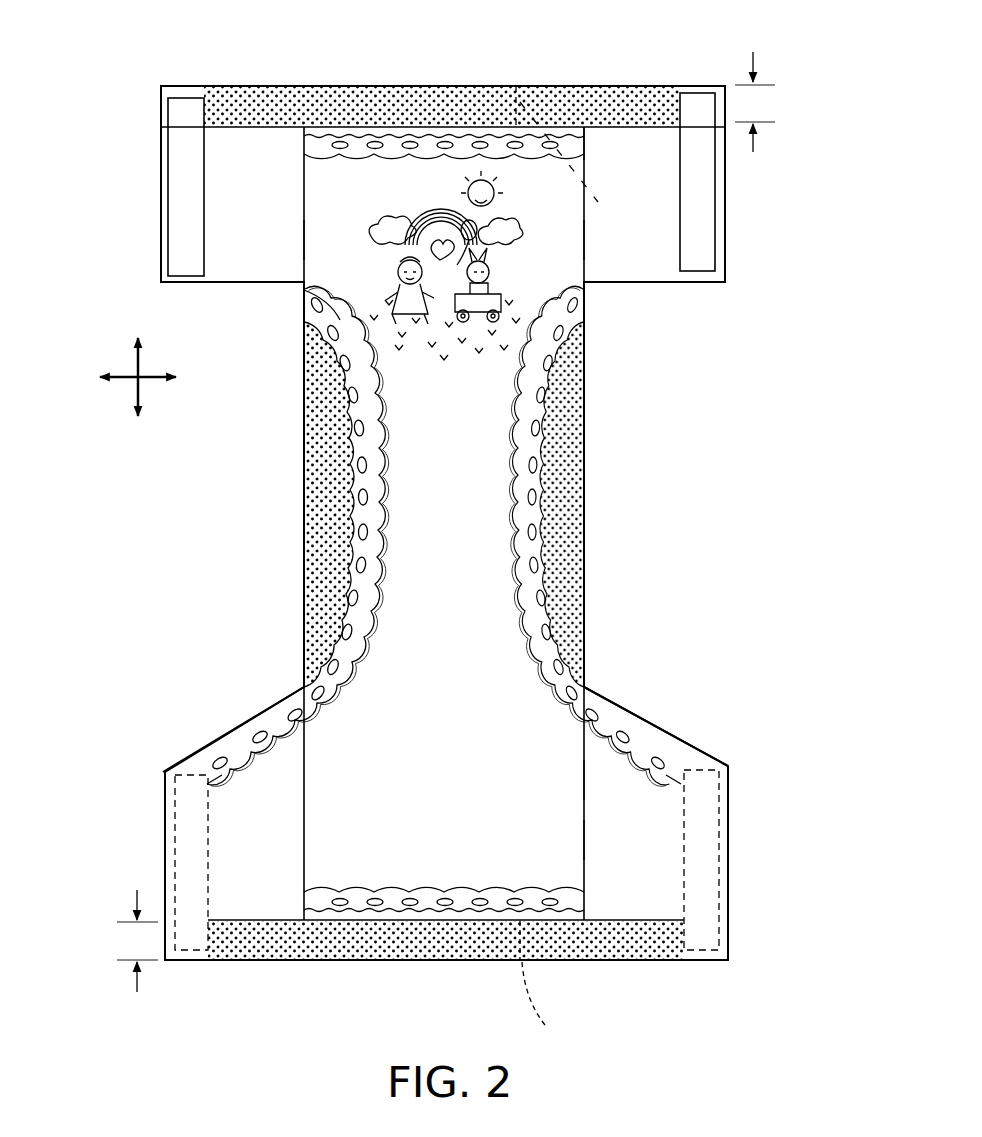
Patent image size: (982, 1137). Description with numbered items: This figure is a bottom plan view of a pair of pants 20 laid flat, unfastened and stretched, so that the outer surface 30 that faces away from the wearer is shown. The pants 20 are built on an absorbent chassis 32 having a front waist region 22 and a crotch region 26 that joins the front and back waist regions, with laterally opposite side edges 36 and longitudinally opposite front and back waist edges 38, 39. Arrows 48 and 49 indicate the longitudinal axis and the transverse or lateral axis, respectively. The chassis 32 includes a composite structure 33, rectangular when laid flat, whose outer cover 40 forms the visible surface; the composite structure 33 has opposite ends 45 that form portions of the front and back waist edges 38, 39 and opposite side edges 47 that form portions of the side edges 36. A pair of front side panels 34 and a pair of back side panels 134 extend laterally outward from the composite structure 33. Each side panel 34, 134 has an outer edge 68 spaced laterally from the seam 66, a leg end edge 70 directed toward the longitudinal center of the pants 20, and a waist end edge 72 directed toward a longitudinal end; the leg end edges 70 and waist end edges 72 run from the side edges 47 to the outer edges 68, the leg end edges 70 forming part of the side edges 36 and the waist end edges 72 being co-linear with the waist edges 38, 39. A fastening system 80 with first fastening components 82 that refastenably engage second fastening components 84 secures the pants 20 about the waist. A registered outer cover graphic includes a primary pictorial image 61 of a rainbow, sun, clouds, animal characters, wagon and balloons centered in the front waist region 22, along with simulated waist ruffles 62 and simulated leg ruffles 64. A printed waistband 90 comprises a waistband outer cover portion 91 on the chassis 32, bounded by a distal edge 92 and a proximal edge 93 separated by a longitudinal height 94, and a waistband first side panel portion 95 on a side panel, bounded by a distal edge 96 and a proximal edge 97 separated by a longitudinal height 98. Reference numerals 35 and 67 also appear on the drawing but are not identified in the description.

The pants 20 is at (205, 79).
The front waist region 22 is at (742, 262).
The crotch region 26 is at (512, 417).
The outer surface 30 is at (578, 434).
The absorbent chassis 32 is at (532, 646).
The composite structure 33 is at (304, 628).
The front side panels 34 is at (443, 174).
The longitudinal centerline 35 is at (501, 102).
The side edges 36 is at (304, 420).
The front waist edge 38 is at (420, 85).
The back waist edge 39 is at (345, 962).
The outer cover 40 is at (325, 320).
The opposite ends 45 is at (568, 85).
The opposite side edges 47 is at (586, 777).
The arrow 48 is at (136, 363).
The arrow 49 is at (144, 380).
The primary pictorial image 61 is at (522, 300).
The simulated waist ruffles 62 is at (397, 118).
The simulated leg ruffles 64 is at (346, 547).
The seam 66 is at (304, 236).
The containment flap edge 67 is at (304, 470).
The outer edge 68 is at (161, 256).
The leg end edge 70 is at (240, 284).
The waist end edge 72 is at (285, 85).
The fastening system 80 is at (676, 108).
The first fastening components 82 is at (172, 810).
The second fastening components 84 is at (180, 160).
The printed waistband 90 is at (553, 85).
The waistband outer cover portion 91 is at (490, 85).
The distal edge 92 is at (405, 85).
The proximal edge 93 is at (345, 132).
The longitudinal height 94 is at (574, 567).
The waistband first side panel portion 95 is at (636, 85).
The distal edge 96 is at (686, 85).
The proximal edge 97 is at (586, 128).
The longitudinal height 98 is at (756, 55).
The back side panels 134 is at (247, 788).